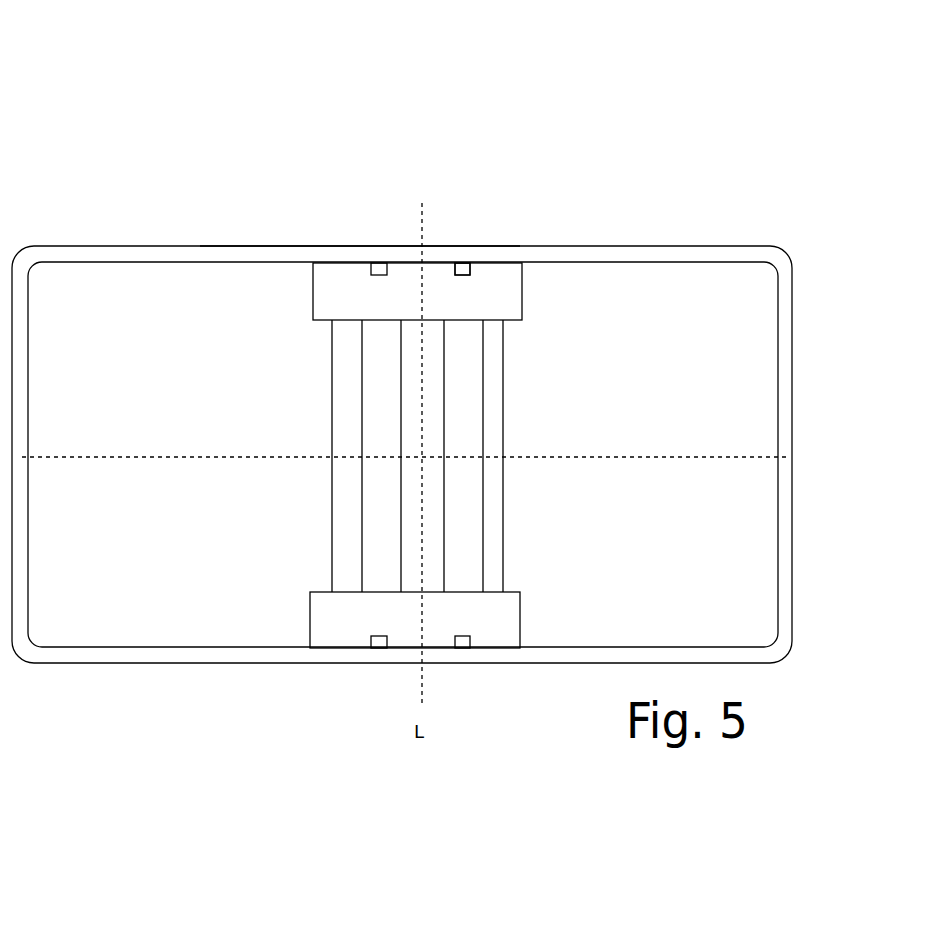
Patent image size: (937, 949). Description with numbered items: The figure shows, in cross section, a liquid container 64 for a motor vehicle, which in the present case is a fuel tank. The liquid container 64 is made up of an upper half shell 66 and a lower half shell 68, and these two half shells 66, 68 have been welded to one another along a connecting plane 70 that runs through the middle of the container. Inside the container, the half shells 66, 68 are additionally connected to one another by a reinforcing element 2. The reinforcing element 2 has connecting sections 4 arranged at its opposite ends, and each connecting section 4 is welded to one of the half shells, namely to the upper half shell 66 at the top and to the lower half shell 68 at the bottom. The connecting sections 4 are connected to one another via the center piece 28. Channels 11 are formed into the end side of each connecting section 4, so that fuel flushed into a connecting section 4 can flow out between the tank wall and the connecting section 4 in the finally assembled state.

The liquid container 64 is at (150, 146).
The upper half shell 66 is at (207, 246).
The lower half shell 68 is at (148, 655).
The connecting plane 70 is at (737, 457).
The reinforcing element 2 is at (463, 392).
The connecting section 4 is at (522, 266).
The channels 11 is at (462, 263).
The center piece 28 is at (522, 321).